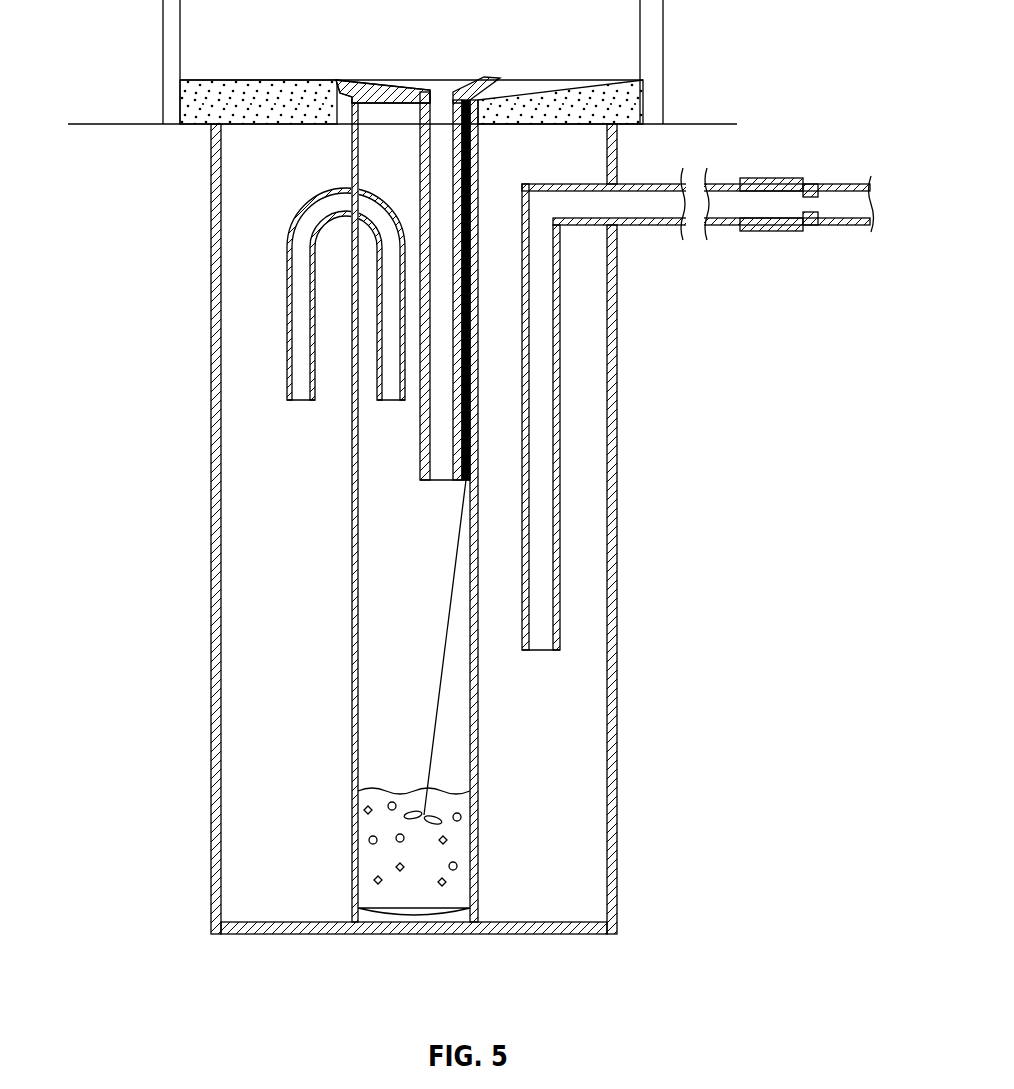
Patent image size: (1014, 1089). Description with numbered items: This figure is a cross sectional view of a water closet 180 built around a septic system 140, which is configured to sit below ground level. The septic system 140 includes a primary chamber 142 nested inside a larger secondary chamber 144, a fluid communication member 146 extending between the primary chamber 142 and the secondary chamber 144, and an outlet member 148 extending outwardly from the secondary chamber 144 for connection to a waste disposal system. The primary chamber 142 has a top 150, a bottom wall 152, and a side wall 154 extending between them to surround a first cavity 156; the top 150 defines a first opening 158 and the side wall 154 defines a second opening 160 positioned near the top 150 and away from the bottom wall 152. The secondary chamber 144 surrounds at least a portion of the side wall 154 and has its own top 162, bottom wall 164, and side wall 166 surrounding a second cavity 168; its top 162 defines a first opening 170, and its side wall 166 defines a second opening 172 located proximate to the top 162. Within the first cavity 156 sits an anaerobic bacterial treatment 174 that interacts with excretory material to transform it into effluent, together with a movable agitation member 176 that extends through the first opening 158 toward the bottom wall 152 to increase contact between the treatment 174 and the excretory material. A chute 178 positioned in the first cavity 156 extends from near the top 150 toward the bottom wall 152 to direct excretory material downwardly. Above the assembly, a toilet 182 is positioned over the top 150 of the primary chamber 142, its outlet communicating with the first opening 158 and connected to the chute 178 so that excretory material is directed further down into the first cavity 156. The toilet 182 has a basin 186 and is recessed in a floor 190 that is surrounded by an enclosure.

The septic system 140 is at (471, 467).
The primary chamber 142 is at (448, 511).
The secondary chamber 144 is at (372, 529).
The fluid communication member 146 is at (300, 203).
The outlet member 148 is at (648, 226).
The top 150 is at (374, 241).
The bottom wall 152 is at (455, 906).
The side wall 154 is at (358, 522).
The first cavity 156 is at (435, 663).
The first opening 158 is at (407, 106).
The second opening 160 is at (351, 190).
The top 162 is at (245, 124).
The bottom wall 164 is at (280, 921).
The side wall 166 is at (222, 490).
The second cavity 168 is at (312, 663).
The first opening 170 is at (526, 125).
The second opening 172 is at (698, 392).
The anaerobic bacterial treatment 174 is at (360, 808).
The agitation member 176 is at (431, 703).
The chute 178 is at (420, 190).
The water closet 180 is at (707, 33).
The toilet 182 is at (336, 80).
The basin 186 is at (465, 96).
The floor 190 is at (227, 80).